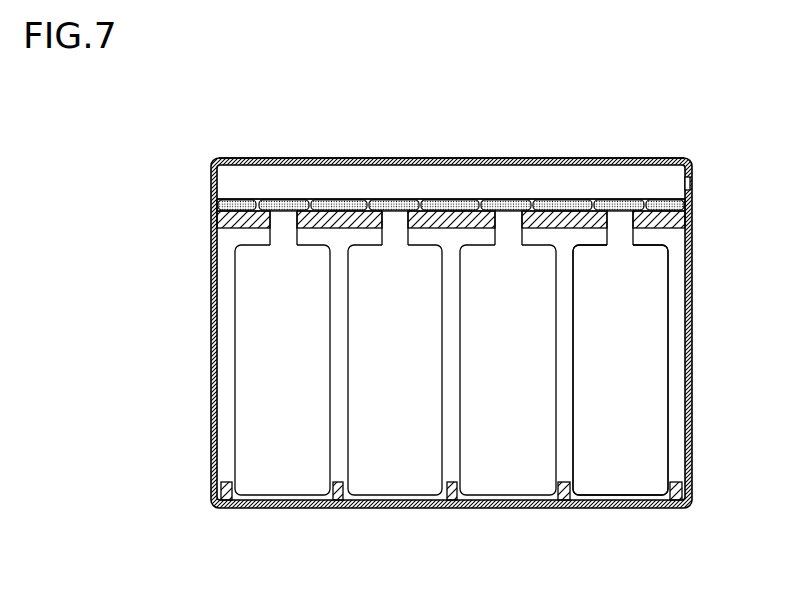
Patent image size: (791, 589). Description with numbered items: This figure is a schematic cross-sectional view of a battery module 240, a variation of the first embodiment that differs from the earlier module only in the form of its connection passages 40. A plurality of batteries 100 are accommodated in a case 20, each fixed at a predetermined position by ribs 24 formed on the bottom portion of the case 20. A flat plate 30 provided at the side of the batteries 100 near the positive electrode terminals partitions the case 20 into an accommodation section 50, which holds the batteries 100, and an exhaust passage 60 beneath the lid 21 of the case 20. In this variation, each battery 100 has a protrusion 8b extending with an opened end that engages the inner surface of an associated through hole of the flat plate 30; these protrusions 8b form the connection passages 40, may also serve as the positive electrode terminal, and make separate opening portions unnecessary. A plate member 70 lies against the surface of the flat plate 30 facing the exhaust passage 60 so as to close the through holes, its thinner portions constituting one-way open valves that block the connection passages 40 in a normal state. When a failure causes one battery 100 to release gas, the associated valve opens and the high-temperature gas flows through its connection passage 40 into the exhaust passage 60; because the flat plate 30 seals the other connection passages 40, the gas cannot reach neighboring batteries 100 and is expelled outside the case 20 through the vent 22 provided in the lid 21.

The battery module 240 is at (694, 99).
The case 20 is at (692, 397).
The lid 21 is at (562, 158).
The vent 22 is at (690, 182).
The ribs 24 is at (337, 508).
The flat plate 30 is at (317, 222).
The connection passages 40 is at (395, 228).
The accommodation section 50 is at (565, 340).
The exhaust passage 60 is at (475, 180).
The plate member 70 is at (282, 198).
The protrusion 8b is at (257, 233).
The batteries 100 is at (308, 358).